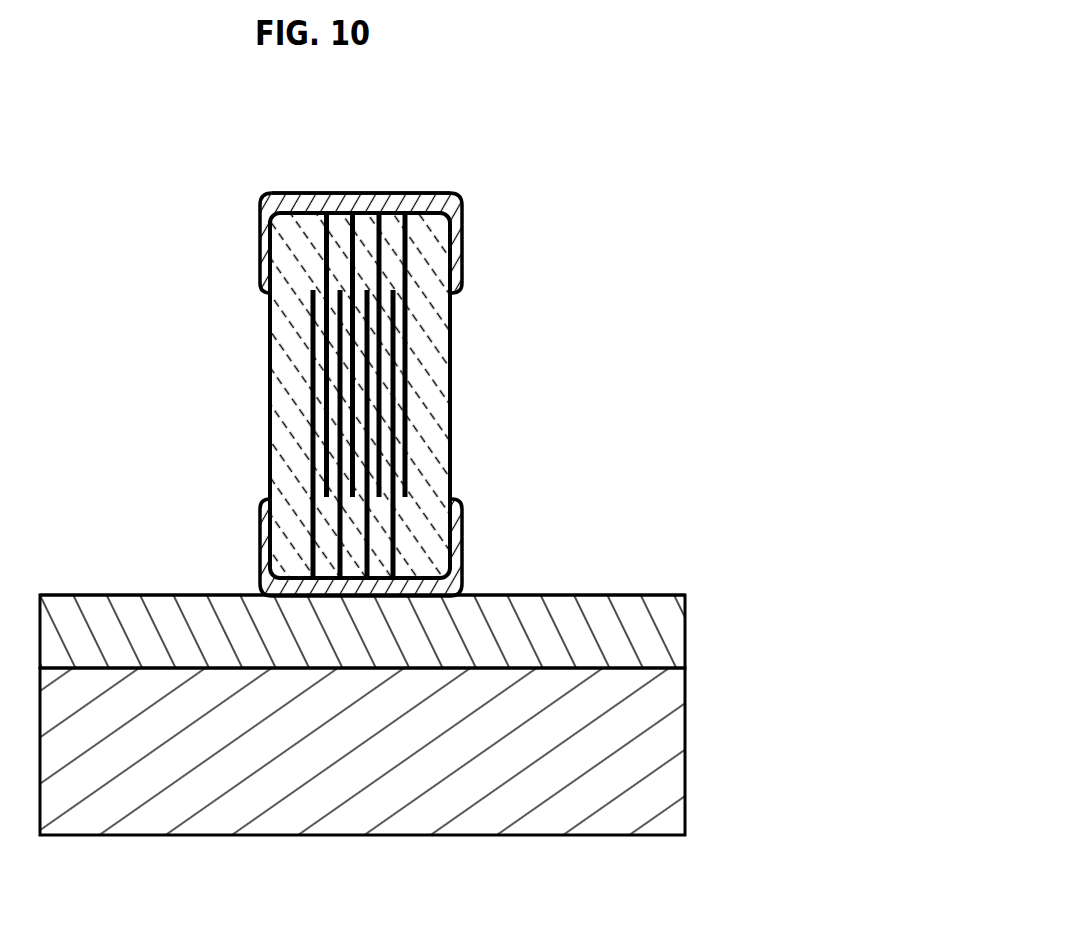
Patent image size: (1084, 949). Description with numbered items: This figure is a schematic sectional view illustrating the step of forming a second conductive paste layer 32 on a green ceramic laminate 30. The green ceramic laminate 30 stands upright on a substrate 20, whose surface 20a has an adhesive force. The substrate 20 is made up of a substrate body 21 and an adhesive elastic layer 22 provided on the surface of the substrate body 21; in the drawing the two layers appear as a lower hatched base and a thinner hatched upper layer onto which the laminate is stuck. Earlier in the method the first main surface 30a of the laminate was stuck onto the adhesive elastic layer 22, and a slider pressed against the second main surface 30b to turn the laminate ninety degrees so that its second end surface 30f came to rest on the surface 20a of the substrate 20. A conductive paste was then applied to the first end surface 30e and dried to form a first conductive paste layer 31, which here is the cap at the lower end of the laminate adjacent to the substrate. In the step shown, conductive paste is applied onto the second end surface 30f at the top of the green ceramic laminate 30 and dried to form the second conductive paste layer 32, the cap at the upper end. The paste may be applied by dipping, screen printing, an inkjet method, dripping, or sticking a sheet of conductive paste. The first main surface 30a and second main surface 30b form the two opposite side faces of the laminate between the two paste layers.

The substrate 20 is at (498, 649).
The surface of substrate 20a is at (645, 595).
The substrate body 21 is at (685, 747).
The adhesive elastic layer 22 is at (685, 636).
The green ceramic laminate 30 is at (350, 485).
The first main surface 30a is at (450, 500).
The second main surface 30b is at (269, 423).
The first end surface 30e is at (355, 577).
The second end surface 30f is at (358, 193).
The first conductive paste layer 31 is at (460, 585).
The second conductive paste layer 32 is at (462, 203).